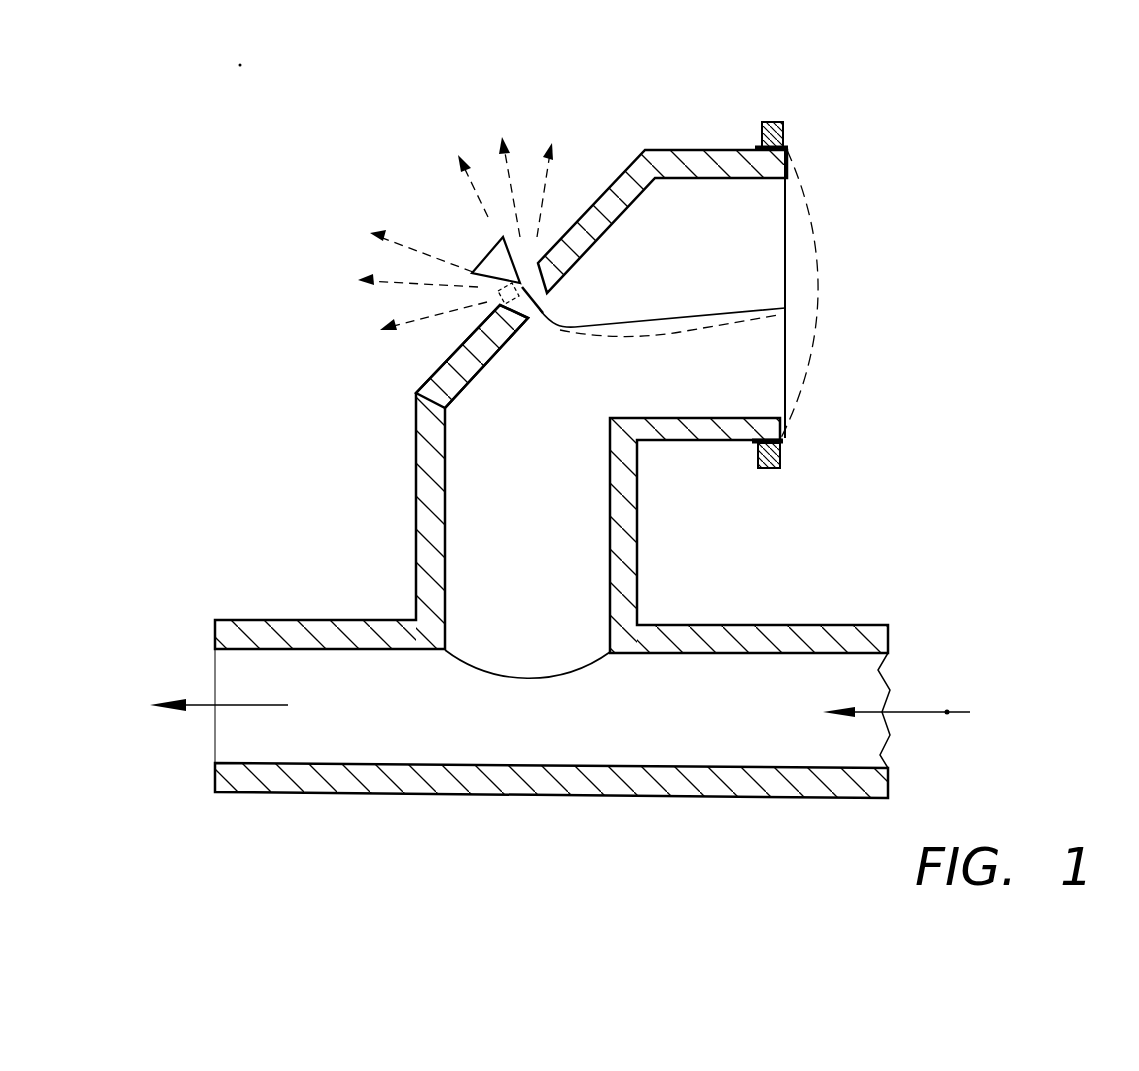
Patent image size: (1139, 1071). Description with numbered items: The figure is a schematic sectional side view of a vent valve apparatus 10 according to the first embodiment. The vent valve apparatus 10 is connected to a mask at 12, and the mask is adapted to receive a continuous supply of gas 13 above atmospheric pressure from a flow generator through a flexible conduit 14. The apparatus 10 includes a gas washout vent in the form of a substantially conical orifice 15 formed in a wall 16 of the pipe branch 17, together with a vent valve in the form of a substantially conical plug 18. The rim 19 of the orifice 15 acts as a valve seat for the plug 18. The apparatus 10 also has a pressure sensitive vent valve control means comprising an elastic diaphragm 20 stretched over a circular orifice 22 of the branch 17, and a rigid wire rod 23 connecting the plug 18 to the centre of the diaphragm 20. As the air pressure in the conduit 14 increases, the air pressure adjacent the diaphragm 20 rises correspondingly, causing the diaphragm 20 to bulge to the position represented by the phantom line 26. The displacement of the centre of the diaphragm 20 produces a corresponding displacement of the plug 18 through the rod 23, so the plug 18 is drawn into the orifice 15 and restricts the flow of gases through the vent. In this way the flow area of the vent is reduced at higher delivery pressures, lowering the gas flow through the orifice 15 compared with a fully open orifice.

The vent valve apparatus 10 is at (227, 247).
The mask connection 12 is at (228, 680).
The continuous supply of gas 13 is at (947, 712).
The flexible conduit 14 is at (872, 625).
The conical orifice 15 is at (518, 303).
The wall 16 is at (633, 162).
The pipe branch 17 is at (417, 453).
The conical plug 18 is at (493, 267).
The rim 19 is at (537, 282).
The elastic diaphragm 20 is at (787, 230).
The circular orifice 22 is at (762, 177).
The rigid wire rod 23 is at (663, 307).
The phantom line 26 is at (812, 357).